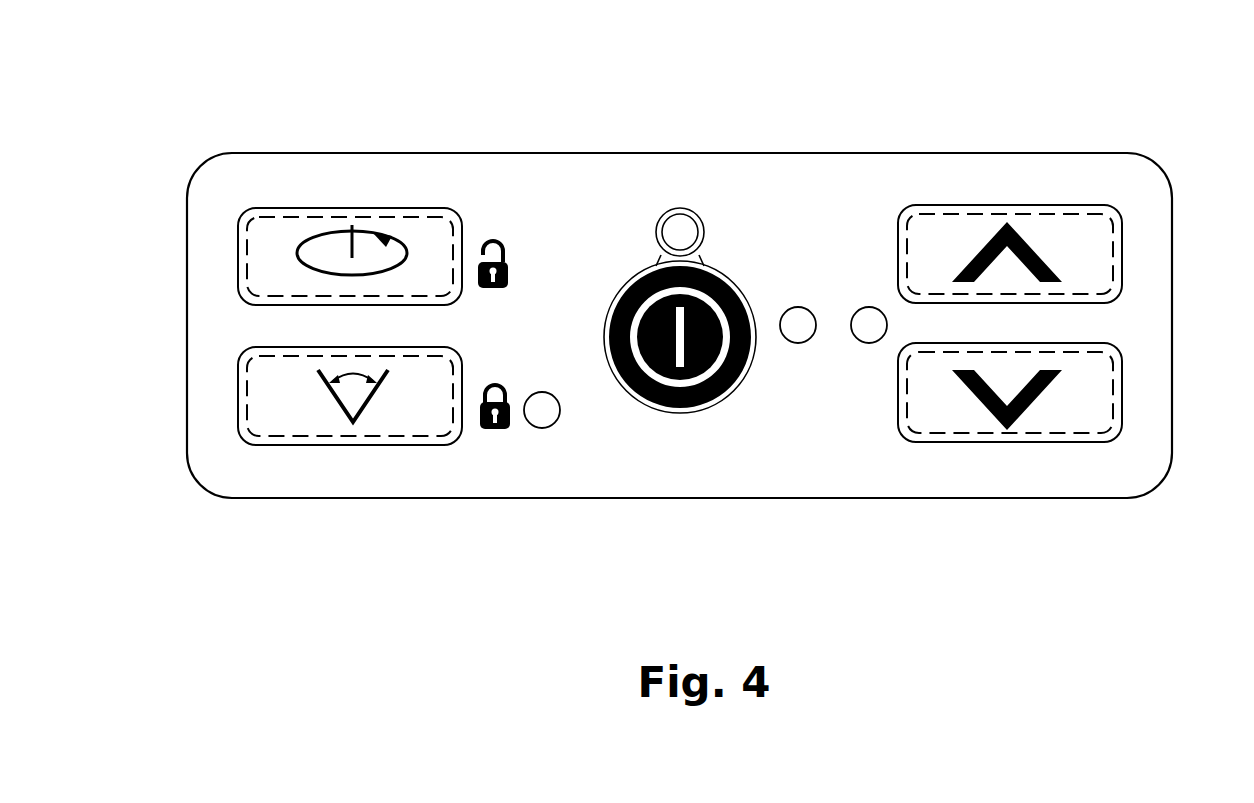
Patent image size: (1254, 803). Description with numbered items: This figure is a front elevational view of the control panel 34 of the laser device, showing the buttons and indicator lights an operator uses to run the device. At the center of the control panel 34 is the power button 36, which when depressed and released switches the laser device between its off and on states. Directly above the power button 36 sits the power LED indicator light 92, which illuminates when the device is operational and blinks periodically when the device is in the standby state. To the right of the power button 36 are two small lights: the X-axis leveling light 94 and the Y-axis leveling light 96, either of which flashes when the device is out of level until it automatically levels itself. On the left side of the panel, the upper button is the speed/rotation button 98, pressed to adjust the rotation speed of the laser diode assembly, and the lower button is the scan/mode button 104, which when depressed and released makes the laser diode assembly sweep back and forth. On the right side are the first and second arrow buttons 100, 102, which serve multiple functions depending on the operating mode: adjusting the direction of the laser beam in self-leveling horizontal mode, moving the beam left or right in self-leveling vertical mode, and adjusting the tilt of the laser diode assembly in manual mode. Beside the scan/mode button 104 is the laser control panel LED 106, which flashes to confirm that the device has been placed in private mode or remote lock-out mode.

The control panel 34 is at (1042, 102).
The power button 36 is at (642, 272).
The power LED indicator light 92 is at (681, 228).
The X-axis leveling light 94 is at (798, 315).
The Y-axis leveling light 96 is at (873, 315).
The speed/rotation button 98 is at (263, 238).
The first arrow button 100 is at (1090, 238).
The second arrow button 102 is at (1090, 410).
The scan/mode button 104 is at (282, 417).
The laser control panel LED 106 is at (543, 413).